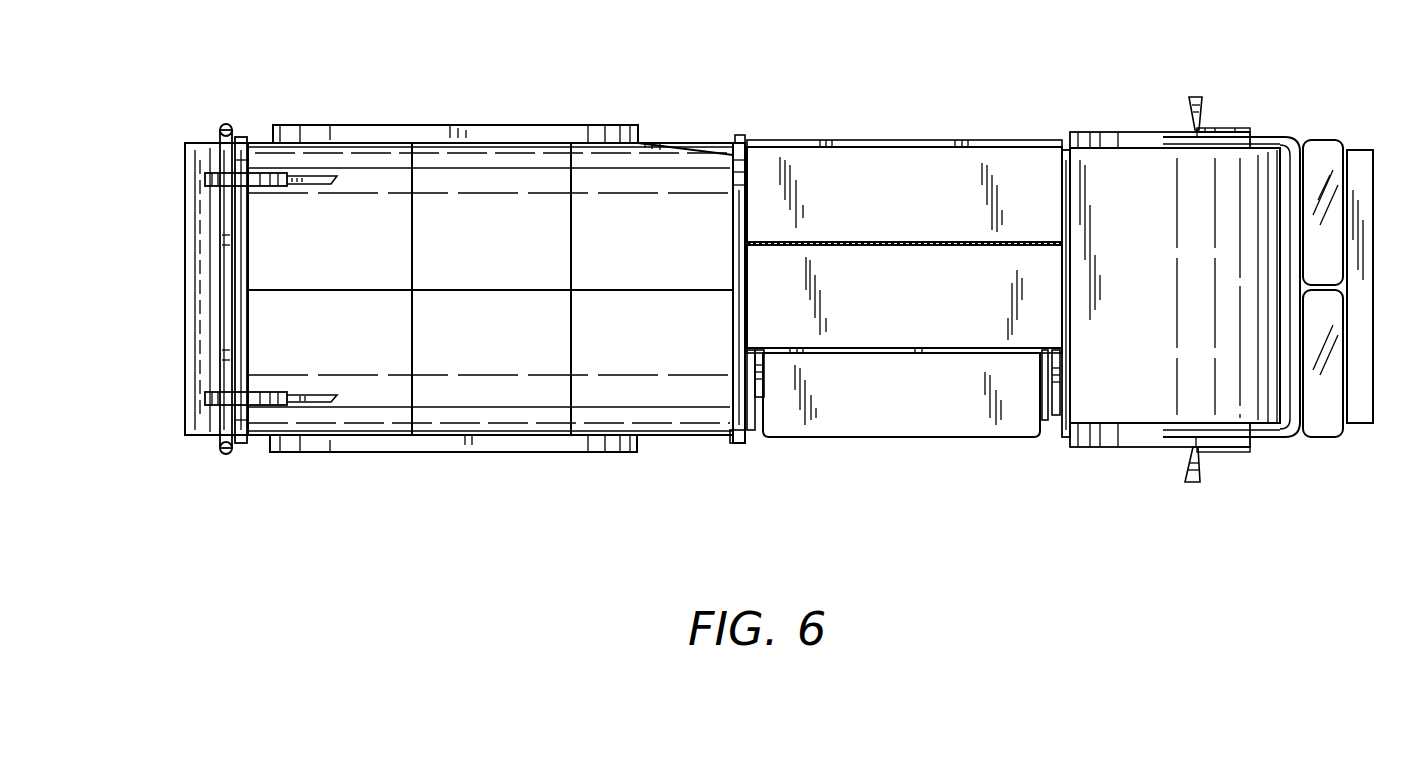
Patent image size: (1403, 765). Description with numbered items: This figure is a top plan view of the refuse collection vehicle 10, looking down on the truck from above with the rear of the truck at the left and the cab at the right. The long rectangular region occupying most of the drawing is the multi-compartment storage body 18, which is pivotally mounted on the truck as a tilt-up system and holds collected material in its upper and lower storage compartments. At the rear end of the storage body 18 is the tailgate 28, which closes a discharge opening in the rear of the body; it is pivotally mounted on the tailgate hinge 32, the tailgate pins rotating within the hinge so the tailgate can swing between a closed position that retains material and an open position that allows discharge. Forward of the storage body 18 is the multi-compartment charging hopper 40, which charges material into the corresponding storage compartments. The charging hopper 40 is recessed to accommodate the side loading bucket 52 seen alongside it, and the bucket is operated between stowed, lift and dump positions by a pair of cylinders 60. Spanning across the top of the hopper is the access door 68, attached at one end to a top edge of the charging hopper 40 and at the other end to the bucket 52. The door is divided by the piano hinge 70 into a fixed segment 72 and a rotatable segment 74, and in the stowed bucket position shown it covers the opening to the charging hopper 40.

The collection vehicle 10 is at (713, 72).
The storage body 18 is at (470, 180).
The tailgate 28 is at (188, 205).
The tailgate hinge 32 is at (257, 175).
The charging hopper 40 is at (957, 353).
The side loading bucket 52 is at (845, 437).
The cylinders 60 is at (1040, 386).
The access door 68 is at (943, 180).
The piano hinge 70 is at (908, 250).
The fixed segment 72 is at (828, 162).
The rotatable segment 74 is at (760, 270).